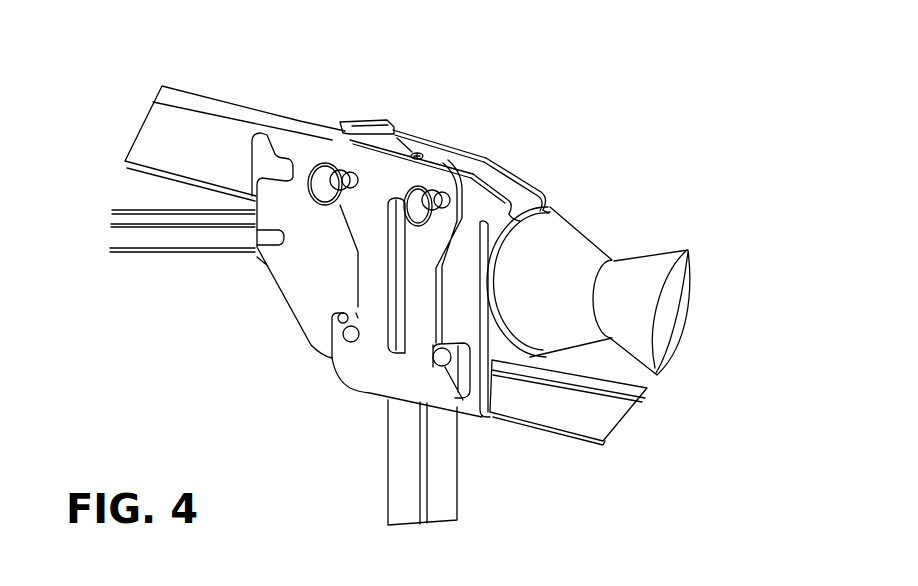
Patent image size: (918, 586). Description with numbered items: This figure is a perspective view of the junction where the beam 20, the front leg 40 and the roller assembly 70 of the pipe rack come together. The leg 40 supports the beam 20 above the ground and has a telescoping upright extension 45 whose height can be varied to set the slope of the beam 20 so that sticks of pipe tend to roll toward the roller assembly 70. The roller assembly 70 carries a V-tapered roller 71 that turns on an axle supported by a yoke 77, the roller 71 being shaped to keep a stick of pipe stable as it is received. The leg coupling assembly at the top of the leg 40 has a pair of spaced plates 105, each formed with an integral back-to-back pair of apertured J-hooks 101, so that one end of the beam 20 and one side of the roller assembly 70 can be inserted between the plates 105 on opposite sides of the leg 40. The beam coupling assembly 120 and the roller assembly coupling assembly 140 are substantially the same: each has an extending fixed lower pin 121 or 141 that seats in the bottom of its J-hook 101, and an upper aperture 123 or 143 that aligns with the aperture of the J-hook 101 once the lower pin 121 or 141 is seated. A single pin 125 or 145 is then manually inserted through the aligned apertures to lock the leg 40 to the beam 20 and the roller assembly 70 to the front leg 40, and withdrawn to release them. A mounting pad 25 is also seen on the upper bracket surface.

The beam 20 is at (200, 60).
The mounting pad 25 is at (345, 122).
The leg 40 is at (403, 345).
The telescoping upright extension 45 is at (457, 480).
The roller assembly 70 is at (698, 188).
The roller 71 is at (601, 233).
The yoke 77 is at (570, 440).
The J-hook 101 is at (360, 392).
The plate 105 is at (440, 150).
The beam coupling assembly 120 is at (283, 302).
The fixed lower pin 121 is at (343, 336).
The upper aperture 123 is at (358, 176).
The pin 125 is at (345, 171).
The roller assembly coupling assembly 140 is at (547, 194).
The fixed lower pin 141 is at (444, 364).
The upper aperture 143 is at (418, 199).
The pin 145 is at (423, 190).